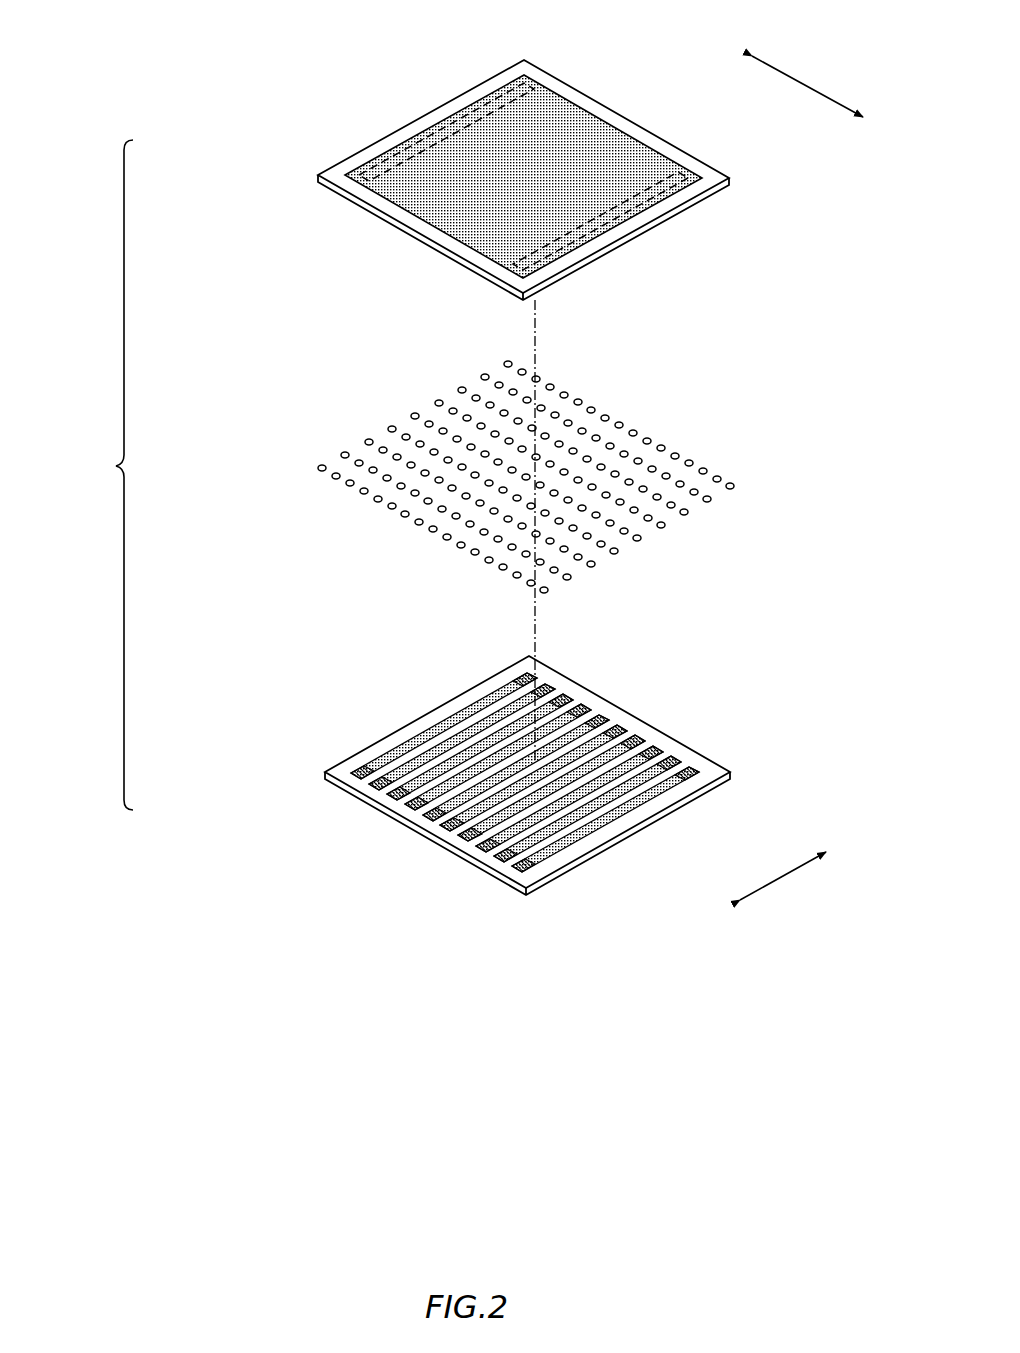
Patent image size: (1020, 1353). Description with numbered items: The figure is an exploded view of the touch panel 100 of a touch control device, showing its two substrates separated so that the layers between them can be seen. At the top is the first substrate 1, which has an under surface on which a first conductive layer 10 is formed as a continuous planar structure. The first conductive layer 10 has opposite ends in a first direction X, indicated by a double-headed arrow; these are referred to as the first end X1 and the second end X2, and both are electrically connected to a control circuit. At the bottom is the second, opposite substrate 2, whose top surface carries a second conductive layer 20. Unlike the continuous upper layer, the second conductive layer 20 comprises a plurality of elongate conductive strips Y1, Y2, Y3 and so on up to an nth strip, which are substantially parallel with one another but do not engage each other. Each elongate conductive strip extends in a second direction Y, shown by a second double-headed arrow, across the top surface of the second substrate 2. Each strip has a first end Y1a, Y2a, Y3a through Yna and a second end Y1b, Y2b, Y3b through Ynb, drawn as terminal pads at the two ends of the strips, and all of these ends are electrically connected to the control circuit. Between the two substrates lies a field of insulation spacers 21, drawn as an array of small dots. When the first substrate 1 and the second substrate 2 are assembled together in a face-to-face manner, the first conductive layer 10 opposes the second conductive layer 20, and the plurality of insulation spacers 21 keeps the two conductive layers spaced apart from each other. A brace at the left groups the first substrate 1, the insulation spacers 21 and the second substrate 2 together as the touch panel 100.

The touch panel 100 is at (89, 475).
The first substrate 1 is at (625, 228).
The first conductive layer 10 is at (432, 128).
The first end X1 is at (680, 193).
The second end X2 is at (507, 88).
The first direction X is at (806, 84).
The insulation spacers 21 is at (702, 468).
The second substrate 2 is at (635, 828).
The second conductive layer 20 is at (670, 728).
The elongate conductive strip Y1 is at (472, 700).
The elongate conductive strip Y2 is at (420, 720).
The elongate conductive strip Y3 is at (400, 772).
The first end Y1a is at (530, 672).
The first end Y2a is at (555, 690).
The first end Y3a is at (578, 700).
The first end Yna is at (693, 770).
The second end Y1b is at (363, 769).
The second end Y2b is at (377, 785).
The second end Y3b is at (398, 790).
The second end Ynb is at (518, 865).
The second direction Y is at (783, 877).